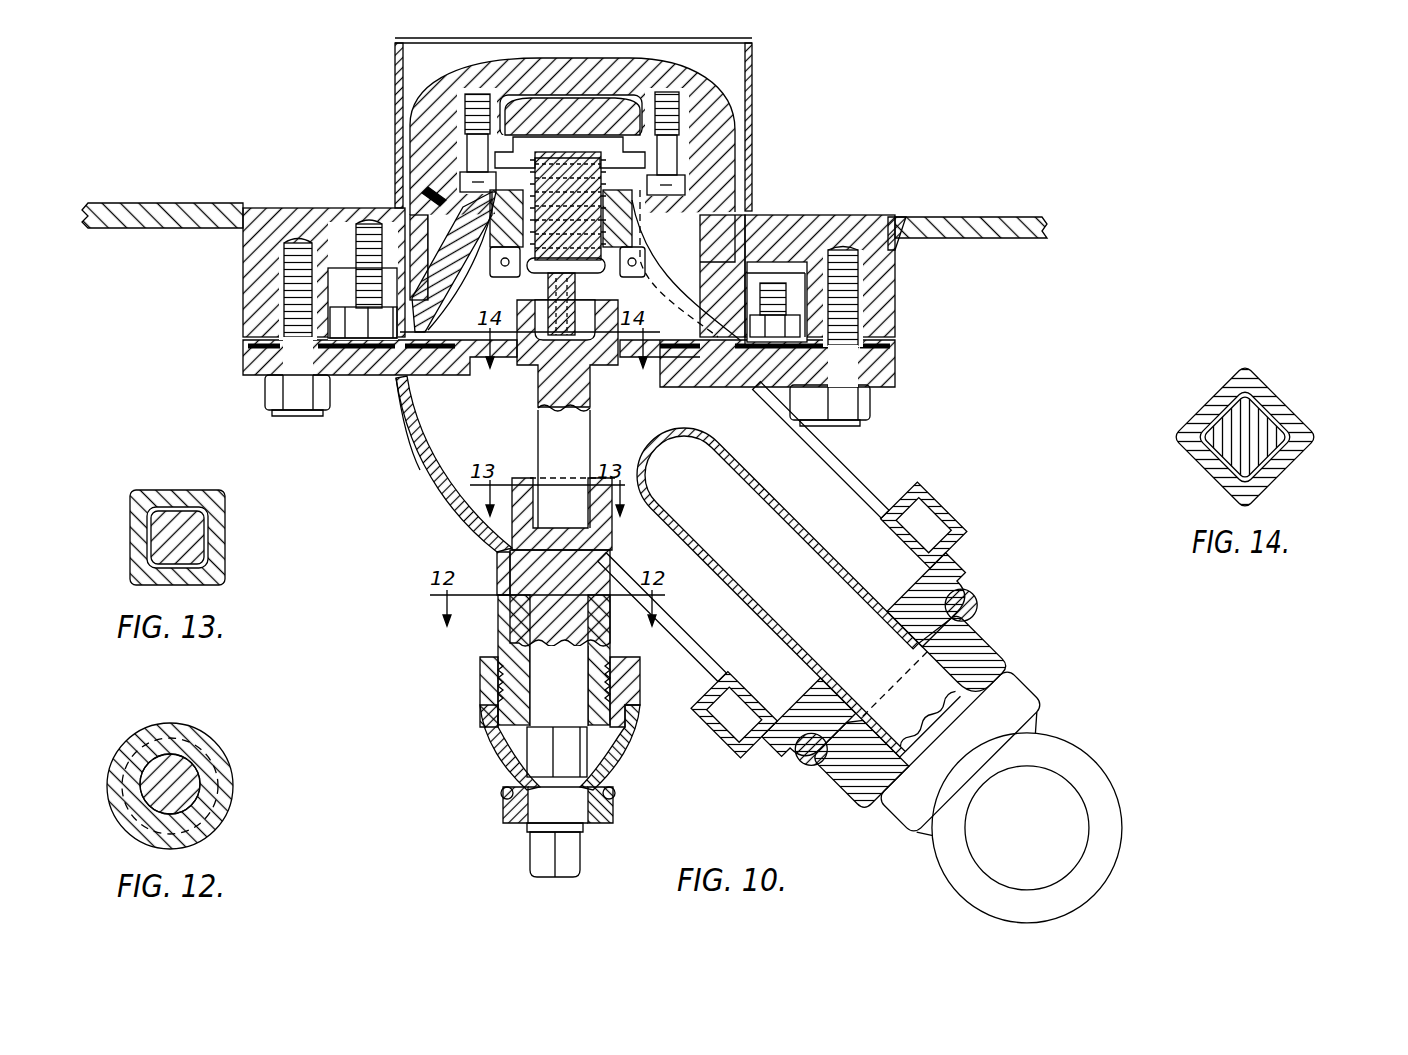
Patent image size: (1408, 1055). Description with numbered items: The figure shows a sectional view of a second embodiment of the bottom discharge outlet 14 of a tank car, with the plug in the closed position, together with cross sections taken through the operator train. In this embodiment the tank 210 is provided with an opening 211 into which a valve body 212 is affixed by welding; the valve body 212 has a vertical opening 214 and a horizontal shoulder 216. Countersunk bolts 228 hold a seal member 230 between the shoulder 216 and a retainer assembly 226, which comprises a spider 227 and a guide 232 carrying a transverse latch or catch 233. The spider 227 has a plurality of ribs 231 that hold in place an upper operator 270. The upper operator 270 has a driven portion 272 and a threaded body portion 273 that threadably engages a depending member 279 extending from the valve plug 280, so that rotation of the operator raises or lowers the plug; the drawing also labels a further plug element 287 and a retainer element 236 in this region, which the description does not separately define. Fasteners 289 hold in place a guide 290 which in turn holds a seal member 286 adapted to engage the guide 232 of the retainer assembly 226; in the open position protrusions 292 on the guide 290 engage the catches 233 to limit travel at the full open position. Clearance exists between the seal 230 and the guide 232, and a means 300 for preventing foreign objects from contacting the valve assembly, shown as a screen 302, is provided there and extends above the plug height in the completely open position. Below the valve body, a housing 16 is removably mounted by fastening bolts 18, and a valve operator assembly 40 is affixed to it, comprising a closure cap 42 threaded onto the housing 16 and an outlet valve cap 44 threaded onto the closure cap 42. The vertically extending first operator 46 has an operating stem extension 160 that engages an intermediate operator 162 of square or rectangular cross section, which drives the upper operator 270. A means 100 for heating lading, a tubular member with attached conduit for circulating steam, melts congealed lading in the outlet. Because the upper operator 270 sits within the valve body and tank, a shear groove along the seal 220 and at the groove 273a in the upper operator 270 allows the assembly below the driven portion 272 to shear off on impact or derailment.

In FIG. 10, the means for preventing foreign objects from contacting the valve assembly 300 is at (380, 46).
In FIG. 10, the screen 302 is at (395, 70).
In FIG. 10, the valve plug 280 is at (737, 136).
In FIG. 10, the depending member 279 is at (672, 113).
In FIG. 10, the left cap bolt 287 is at (715, 118).
In FIG. 10, the fasteners 289 is at (670, 150).
In FIG. 10, the spring retainer 236 is at (520, 168).
In FIG. 10, the guide 290 is at (420, 200).
In FIG. 10, the seal member 286 is at (405, 212).
In FIG. 10, the tank 210 is at (1019, 214).
In FIG. 10, the opening 211 is at (897, 217).
In FIG. 10, the valve body 212 is at (895, 280).
In FIG. 10, the vertical opening 214 is at (800, 333).
In FIG. 10, the horizontal shoulder 216 is at (797, 273).
In FIG. 10, the seal 220 is at (895, 350).
In FIG. 10, the retainer assembly 226 is at (403, 290).
In FIG. 10, the spider 227 is at (670, 294).
In FIG. 10, the countersunk bolts 228 is at (745, 352).
In FIG. 10, the seal member 230 is at (752, 262).
In FIG. 10, the ribs 231 is at (505, 280).
In FIG. 10, the guide 232 is at (760, 222).
In FIG. 10, the transverse latch or catch 233 is at (740, 217).
In FIG. 10, the upper operator 270 is at (599, 372).
In FIG. 14, the upper operator 270 is at (1292, 396).
In FIG. 10, the driven portion 272 is at (520, 368).
In FIG. 14, the driven portion 272 is at (1262, 432).
In FIG. 10, the threaded body portion 273 is at (633, 232).
In FIG. 10, the shear groove 273a is at (645, 348).
In FIG. 10, the fastening bolts 18 is at (265, 397).
In FIG. 10, the protrusions 292 is at (385, 408).
In FIG. 10, the housing 16 is at (422, 487).
In FIG. 12, the housing 16 is at (207, 752).
In FIG. 10, the intermediate operator 162 is at (556, 440).
In FIG. 13, the intermediate operator 162 is at (185, 535).
In FIG. 14, the intermediate operator 162 is at (1300, 445).
In FIG. 10, the operating stem extension 160 is at (513, 528).
In FIG. 13, the operating stem extension 160 is at (218, 499).
In FIG. 10, the first operator 46 is at (560, 608).
In FIG. 12, the first operator 46 is at (182, 785).
In FIG. 10, the valve operator assembly 40 is at (462, 654).
In FIG. 10, the closure cap 42 is at (497, 758).
In FIG. 10, the outlet valve cap 44 is at (590, 856).
In FIG. 10, the bottom discharge outlet 14 is at (868, 471).
In FIG. 10, the means for heating lading 100 is at (1019, 648).